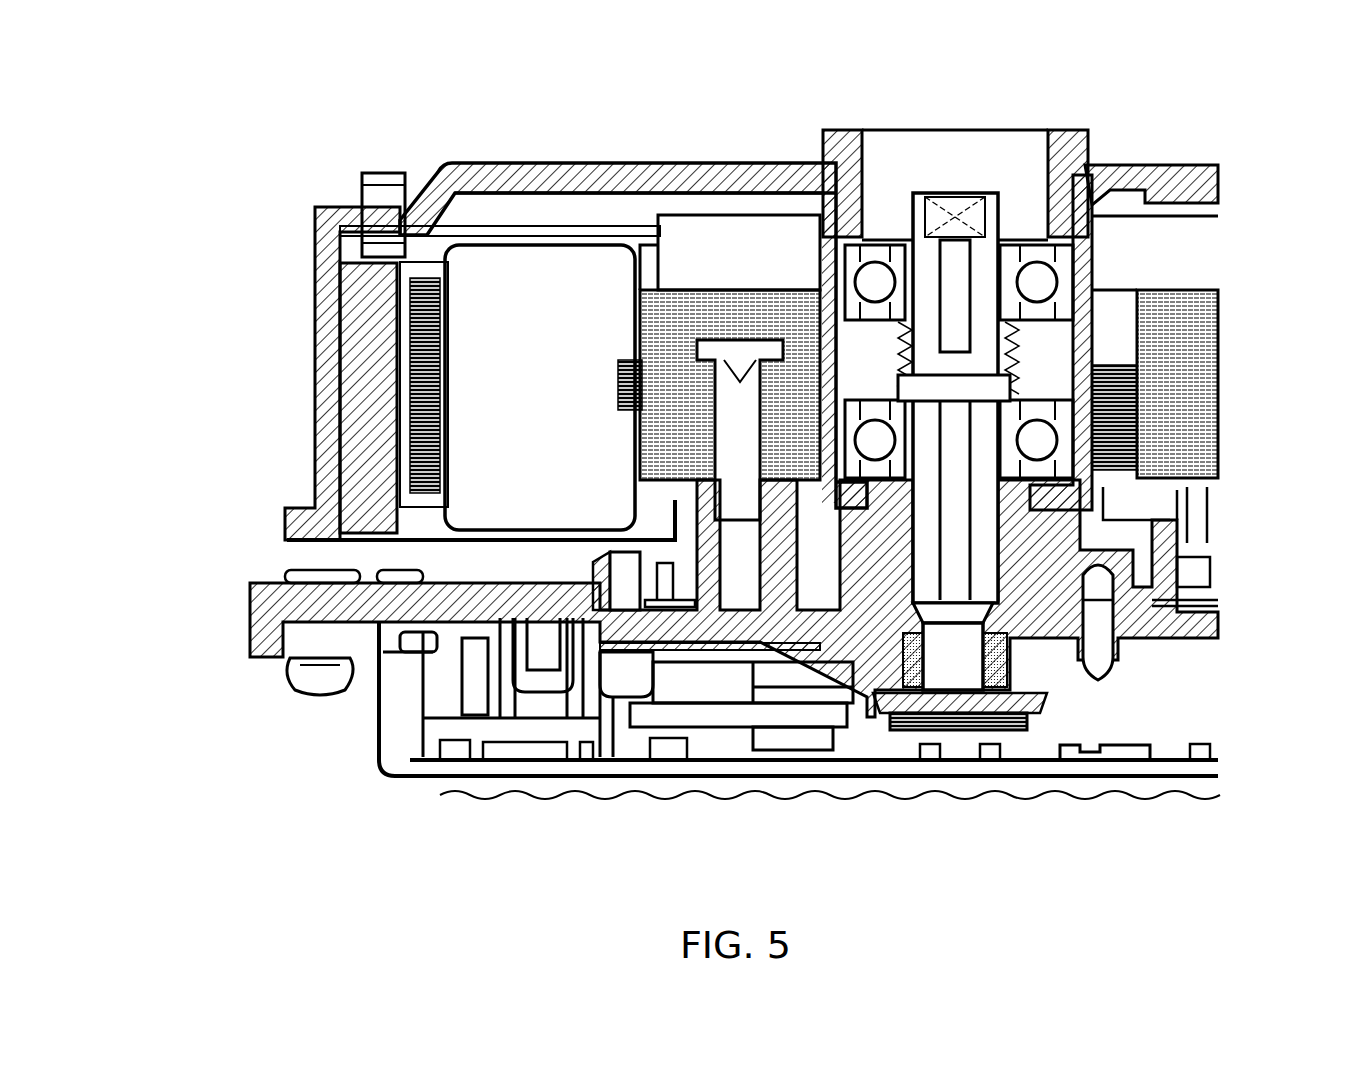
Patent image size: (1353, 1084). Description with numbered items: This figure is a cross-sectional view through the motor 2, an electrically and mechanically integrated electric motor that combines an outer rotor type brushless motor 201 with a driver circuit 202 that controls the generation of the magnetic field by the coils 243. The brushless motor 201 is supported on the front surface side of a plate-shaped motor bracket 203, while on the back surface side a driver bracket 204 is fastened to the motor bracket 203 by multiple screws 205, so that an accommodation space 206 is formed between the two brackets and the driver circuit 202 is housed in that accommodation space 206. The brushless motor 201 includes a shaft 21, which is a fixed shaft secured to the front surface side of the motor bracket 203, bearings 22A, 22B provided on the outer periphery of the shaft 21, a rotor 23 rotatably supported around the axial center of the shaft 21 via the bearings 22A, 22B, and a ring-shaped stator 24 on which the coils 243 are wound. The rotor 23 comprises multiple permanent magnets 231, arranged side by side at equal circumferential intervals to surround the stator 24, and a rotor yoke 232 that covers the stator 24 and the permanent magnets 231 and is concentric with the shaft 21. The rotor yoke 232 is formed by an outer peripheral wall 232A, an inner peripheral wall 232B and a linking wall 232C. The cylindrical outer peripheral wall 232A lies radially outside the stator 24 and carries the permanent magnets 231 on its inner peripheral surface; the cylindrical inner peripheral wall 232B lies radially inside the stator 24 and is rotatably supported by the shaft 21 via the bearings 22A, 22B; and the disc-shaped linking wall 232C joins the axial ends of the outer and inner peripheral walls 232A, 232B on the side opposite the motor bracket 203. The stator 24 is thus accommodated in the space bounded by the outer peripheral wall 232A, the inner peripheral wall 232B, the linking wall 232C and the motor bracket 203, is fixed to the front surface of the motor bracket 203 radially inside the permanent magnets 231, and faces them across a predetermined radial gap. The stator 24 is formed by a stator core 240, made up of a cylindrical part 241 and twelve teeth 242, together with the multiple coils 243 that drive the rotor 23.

The motor 2 is at (248, 102).
The shaft 21 is at (935, 172).
The bearing 22A is at (1075, 268).
The bearing 22B is at (1100, 478).
The rotor 23 is at (1248, 168).
The stator 24 is at (628, 555).
The brushless motor 201 is at (192, 322).
The driver circuit 202 is at (1170, 760).
The motor bracket 203 is at (255, 598).
The driver bracket 204 is at (380, 718).
The screw 205 is at (320, 682).
The accommodation space 206 is at (1178, 800).
The permanent magnet 231 is at (350, 325).
The rotor yoke 232 is at (312, 481).
The outer peripheral wall 232A is at (327, 395).
The inner peripheral wall 232B is at (816, 262).
The linking wall 232C is at (660, 245).
The stator core 240 is at (487, 100).
The cylindrical part 241 is at (595, 186).
The tooth 242 is at (430, 280).
The coil 243 is at (560, 392).